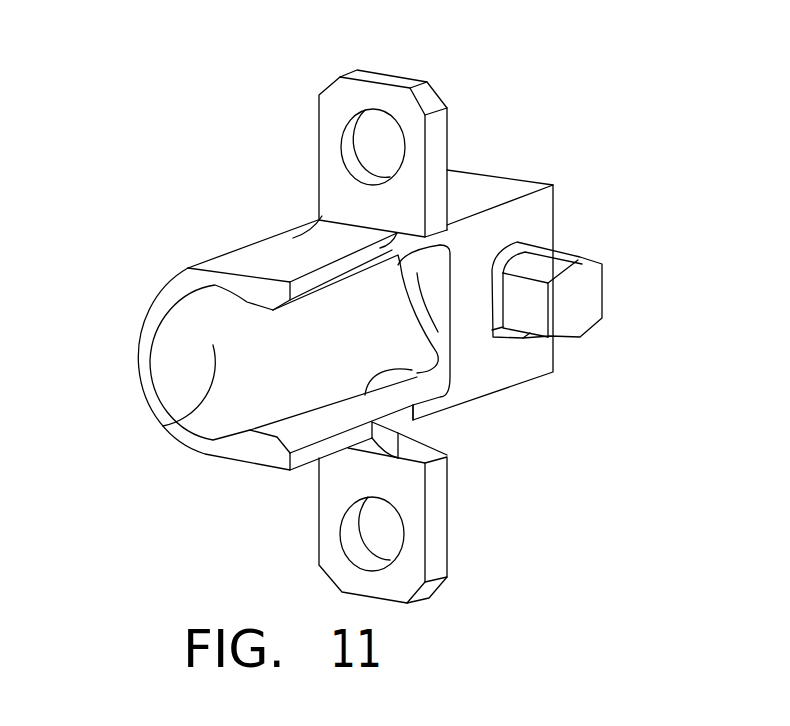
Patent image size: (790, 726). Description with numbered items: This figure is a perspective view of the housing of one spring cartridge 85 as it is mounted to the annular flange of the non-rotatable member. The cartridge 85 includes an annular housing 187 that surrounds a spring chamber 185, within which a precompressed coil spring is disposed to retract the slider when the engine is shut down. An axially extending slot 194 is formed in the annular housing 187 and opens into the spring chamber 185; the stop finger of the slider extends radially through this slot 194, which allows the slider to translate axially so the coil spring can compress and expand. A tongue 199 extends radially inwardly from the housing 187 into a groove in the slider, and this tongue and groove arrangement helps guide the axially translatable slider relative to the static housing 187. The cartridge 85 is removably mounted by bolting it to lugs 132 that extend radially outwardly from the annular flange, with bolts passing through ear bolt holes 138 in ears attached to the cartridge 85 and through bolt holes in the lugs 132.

The cartridge 85 is at (150, 295).
The lug 132 is at (402, 80).
The ear bolt hole 138 is at (352, 138).
The spring chamber 185 is at (163, 427).
The annular housing 187 is at (248, 242).
The axially extending slot 194 is at (430, 397).
The tongue 199 is at (557, 263).